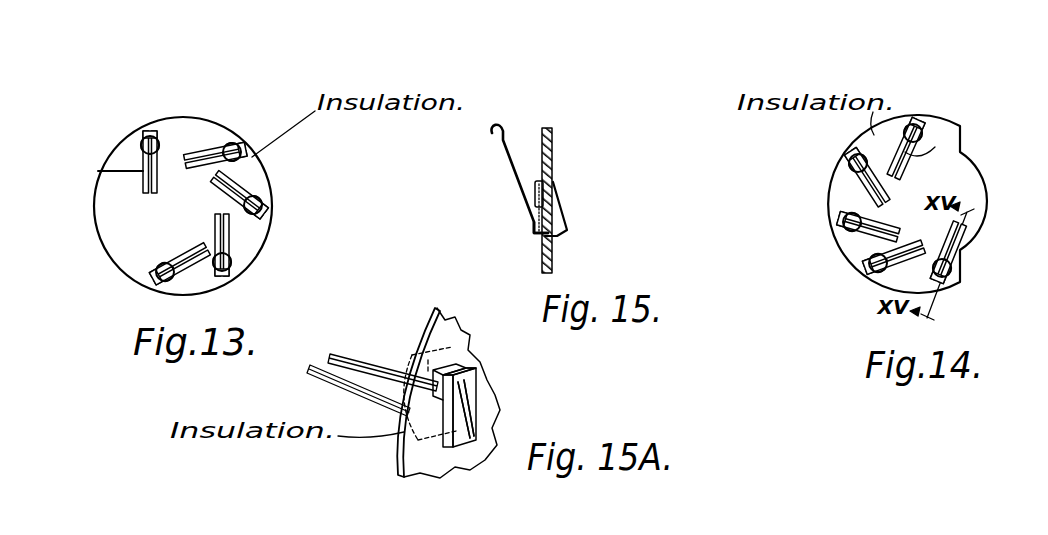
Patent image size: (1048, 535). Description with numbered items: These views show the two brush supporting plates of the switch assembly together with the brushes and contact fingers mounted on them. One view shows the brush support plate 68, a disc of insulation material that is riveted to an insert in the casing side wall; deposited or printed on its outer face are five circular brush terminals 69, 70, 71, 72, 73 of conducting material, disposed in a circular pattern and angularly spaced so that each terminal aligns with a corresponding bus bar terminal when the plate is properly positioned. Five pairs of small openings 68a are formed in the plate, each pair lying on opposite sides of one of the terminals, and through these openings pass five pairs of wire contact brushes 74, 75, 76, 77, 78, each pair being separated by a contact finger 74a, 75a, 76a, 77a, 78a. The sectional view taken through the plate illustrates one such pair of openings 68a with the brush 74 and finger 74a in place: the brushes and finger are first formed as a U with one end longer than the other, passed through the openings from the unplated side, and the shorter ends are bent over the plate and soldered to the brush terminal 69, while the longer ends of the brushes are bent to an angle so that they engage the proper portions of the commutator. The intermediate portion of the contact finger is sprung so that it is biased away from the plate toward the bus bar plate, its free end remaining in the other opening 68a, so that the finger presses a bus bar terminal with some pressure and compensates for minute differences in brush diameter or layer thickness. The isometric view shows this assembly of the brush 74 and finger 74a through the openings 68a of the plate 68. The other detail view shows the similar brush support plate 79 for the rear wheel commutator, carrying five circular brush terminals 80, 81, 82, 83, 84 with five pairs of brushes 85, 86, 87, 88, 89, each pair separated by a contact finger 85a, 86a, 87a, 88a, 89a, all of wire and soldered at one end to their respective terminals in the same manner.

In FIG. 15, the brush support plate 68 is at (553, 143).
In FIG. 15A, the brush support plate 68 is at (430, 322).
In FIG. 14, the brush support plate 68 is at (980, 185).
In FIG. 15, the openings 68a is at (555, 183).
In FIG. 15A, the openings 68a is at (460, 372).
In FIG. 15, the brush terminal 69 is at (540, 212).
In FIG. 15A, the brush terminal 69 is at (402, 378).
In FIG. 14, the brush terminal 69 is at (960, 275).
In FIG. 14, the brush terminal 70 is at (878, 275).
In FIG. 14, the brush terminal 71 is at (838, 225).
In FIG. 14, the brush terminal 72 is at (849, 162).
In FIG. 14, the brush terminal 73 is at (920, 135).
In FIG. 15, the contact brushes 74 is at (503, 162).
In FIG. 15A, the contact brushes 74 is at (478, 393).
In FIG. 14, the contact brushes 74 is at (965, 252).
In FIG. 15, the contact finger 74a is at (563, 222).
In FIG. 15A, the contact finger 74a is at (467, 406).
In FIG. 14, the contact finger 74a is at (947, 282).
In FIG. 14, the contact brushes 75 is at (903, 255).
In FIG. 14, the contact finger 75a is at (866, 268).
In FIG. 14, the contact brushes 76 is at (870, 236).
In FIG. 14, the contact finger 76a is at (845, 216).
In FIG. 14, the contact brushes 77 is at (858, 185).
In FIG. 14, the contact finger 77a is at (856, 152).
In FIG. 14, the contact brushes 78 is at (928, 152).
In FIG. 14, the contact finger 78a is at (918, 123).
In FIG. 13, the brush support plate 79 is at (108, 205).
In FIG. 13, the brush terminal 80 is at (160, 267).
In FIG. 13, the brush terminal 81 is at (233, 268).
In FIG. 13, the brush terminal 82 is at (264, 204).
In FIG. 13, the brush terminal 83 is at (228, 152).
In FIG. 13, the brush terminal 84 is at (158, 136).
In FIG. 13, the brushes 85 is at (190, 268).
In FIG. 13, the contact finger 85a is at (155, 284).
In FIG. 13, the brushes 86 is at (228, 238).
In FIG. 13, the contact finger 86a is at (222, 283).
In FIG. 13, the brushes 87 is at (250, 192).
In FIG. 13, the contact finger 87a is at (267, 226).
In FIG. 13, the brushes 88 is at (205, 158).
In FIG. 13, the contact finger 88a is at (242, 150).
In FIG. 13, the brushes 89 is at (99, 170).
In FIG. 13, the contact finger 89a is at (148, 128).